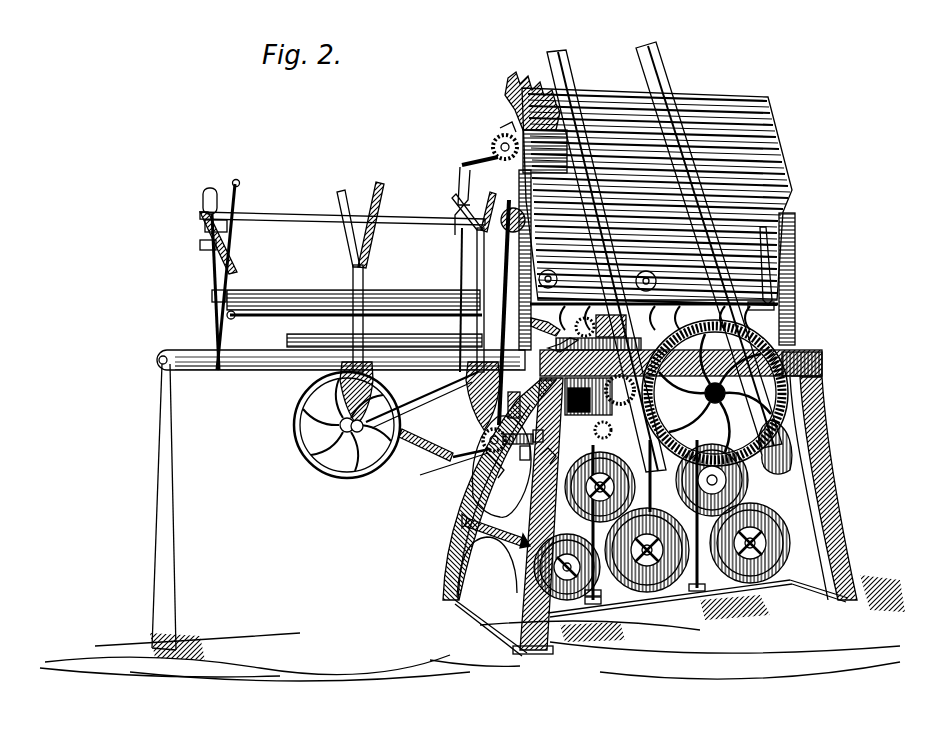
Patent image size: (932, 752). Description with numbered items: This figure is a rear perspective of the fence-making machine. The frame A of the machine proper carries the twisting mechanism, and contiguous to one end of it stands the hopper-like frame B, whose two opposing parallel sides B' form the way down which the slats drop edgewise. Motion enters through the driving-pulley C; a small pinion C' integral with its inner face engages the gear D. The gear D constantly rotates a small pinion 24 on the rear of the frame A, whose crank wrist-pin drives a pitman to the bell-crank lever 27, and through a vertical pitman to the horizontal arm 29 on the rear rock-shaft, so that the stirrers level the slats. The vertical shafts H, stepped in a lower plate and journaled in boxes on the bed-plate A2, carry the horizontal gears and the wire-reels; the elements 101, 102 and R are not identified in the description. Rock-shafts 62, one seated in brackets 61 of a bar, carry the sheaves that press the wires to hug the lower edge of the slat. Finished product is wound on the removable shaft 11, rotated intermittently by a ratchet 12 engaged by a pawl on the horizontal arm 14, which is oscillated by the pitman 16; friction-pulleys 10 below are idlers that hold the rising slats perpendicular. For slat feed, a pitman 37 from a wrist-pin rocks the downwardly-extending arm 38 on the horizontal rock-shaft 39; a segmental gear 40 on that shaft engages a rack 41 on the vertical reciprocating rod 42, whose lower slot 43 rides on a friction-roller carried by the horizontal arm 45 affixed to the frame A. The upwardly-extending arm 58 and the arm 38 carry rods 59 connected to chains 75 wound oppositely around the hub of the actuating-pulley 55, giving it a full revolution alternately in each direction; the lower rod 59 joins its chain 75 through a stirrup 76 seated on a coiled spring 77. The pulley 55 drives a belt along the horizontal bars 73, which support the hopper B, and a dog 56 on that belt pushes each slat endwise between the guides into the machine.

The friction-pulleys 10 is at (567, 276).
The intermittingly-rotating removable shaft 11 is at (495, 141).
The ratchet 12 is at (502, 128).
The horizontal arm 14 is at (472, 158).
The pitman 16 is at (470, 264).
The small pinion 24 is at (611, 329).
The bell-crank lever 27 is at (541, 322).
The horizontal arm 29 is at (502, 216).
The pitman 37 is at (530, 455).
The downwardly-extending arm 38 is at (502, 465).
The horizontal rock-shaft 39 is at (483, 440).
The segmental gear 40 is at (454, 470).
The rack 41 is at (512, 446).
The vertical reciprocating rod 42 is at (519, 402).
The vertical slot 43 is at (533, 430).
The horizontal arm 45 is at (549, 460).
The actuating-pulley 55 is at (338, 423).
The dog 56 is at (286, 339).
The upwardly-extending arm 58 is at (450, 396).
The rods 59 is at (422, 405).
The brackets 61 is at (577, 327).
The rock-shafts 62 is at (792, 302).
The horizontal bars 73 is at (282, 372).
The chains 75 is at (366, 432).
The stirrup 76 is at (440, 448).
The coiled spring 77 is at (448, 443).
The lever 101 is at (549, 346).
The rack bar 102 is at (584, 334).
The frame A is at (806, 420).
The bed-plate A2 is at (815, 356).
The hopper-like frame B is at (338, 500).
The sides of hopper B' is at (416, 277).
The driving-pulley C is at (715, 393).
The pinion C' is at (654, 407).
The gear D is at (581, 411).
The vertical shaft H is at (599, 584).
The wire reels R is at (662, 522).